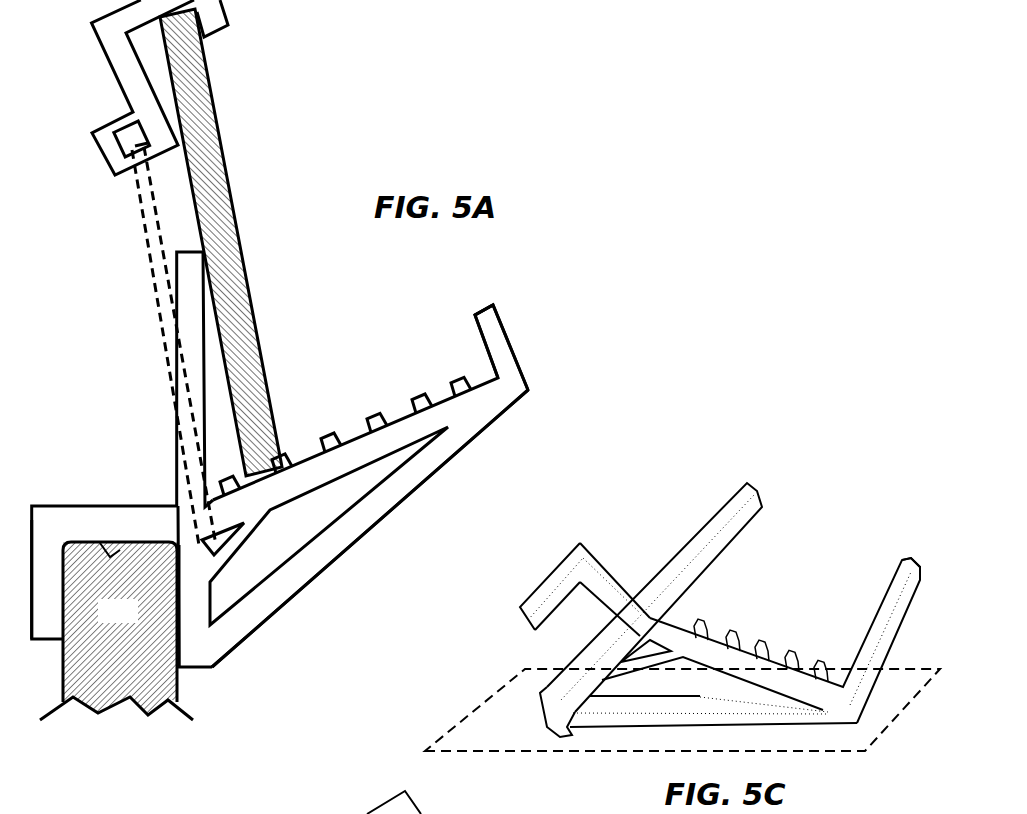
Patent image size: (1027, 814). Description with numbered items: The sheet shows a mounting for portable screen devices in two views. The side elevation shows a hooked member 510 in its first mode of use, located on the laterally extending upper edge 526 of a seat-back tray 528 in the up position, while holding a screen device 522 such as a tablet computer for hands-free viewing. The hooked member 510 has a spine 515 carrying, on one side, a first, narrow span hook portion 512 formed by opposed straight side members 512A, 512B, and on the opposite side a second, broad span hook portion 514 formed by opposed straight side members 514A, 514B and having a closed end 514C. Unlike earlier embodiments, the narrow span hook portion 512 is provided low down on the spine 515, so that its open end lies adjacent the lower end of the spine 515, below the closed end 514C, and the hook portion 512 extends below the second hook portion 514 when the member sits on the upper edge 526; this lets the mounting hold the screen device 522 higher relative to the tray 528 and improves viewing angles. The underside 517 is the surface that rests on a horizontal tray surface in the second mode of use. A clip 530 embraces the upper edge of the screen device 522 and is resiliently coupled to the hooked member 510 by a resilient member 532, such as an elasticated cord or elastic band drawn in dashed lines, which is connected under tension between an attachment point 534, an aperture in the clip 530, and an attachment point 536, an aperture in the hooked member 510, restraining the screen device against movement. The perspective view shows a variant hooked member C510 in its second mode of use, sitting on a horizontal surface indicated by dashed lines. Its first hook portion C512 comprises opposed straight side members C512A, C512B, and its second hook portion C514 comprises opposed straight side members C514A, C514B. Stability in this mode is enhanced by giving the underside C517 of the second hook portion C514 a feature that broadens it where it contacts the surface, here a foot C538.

In FIG. 5A, the hooked member 510 is at (339, 407).
In FIG. 5A, the first narrow span hook portion 512 is at (97, 505).
In FIG. 5A, the straight side member 512A is at (45, 590).
In FIG. 5A, the straight side member 512B is at (181, 545).
In FIG. 5A, the second broad span hook portion 514 is at (514, 350).
In FIG. 5A, the straight side member 514A is at (492, 332).
In FIG. 5A, the straight side member 514B is at (198, 380).
In FIG. 5A, the closed end 514C is at (358, 437).
In FIG. 5A, the spine 515 is at (187, 292).
In FIG. 5A, the underside 517 is at (304, 586).
In FIG. 5A, the screen device 522 is at (237, 223).
In FIG. 5A, the upper edge 526 is at (121, 553).
In FIG. 5A, the seat-back tray 528 is at (101, 621).
In FIG. 5A, the clip 530 is at (97, 38).
In FIG. 5A, the resilient member 532 is at (145, 222).
In FIG. 5A, the attachment point 534 is at (127, 137).
In FIG. 5A, the attachment point 536 is at (232, 536).
In FIG. 5C, the hooked member C510 is at (666, 642).
In FIG. 5C, the first hook portion C512 is at (559, 585).
In FIG. 5C, the straight side member C512A is at (555, 600).
In FIG. 5C, the straight side member C512B is at (602, 653).
In FIG. 5C, the second hook portion C514 is at (877, 610).
In FIG. 5C, the straight side member C514A is at (893, 577).
In FIG. 5C, the straight side member C514B is at (708, 558).
In FIG. 5C, the underside C517 is at (640, 728).
In FIG. 5C, the foot C538 is at (545, 713).